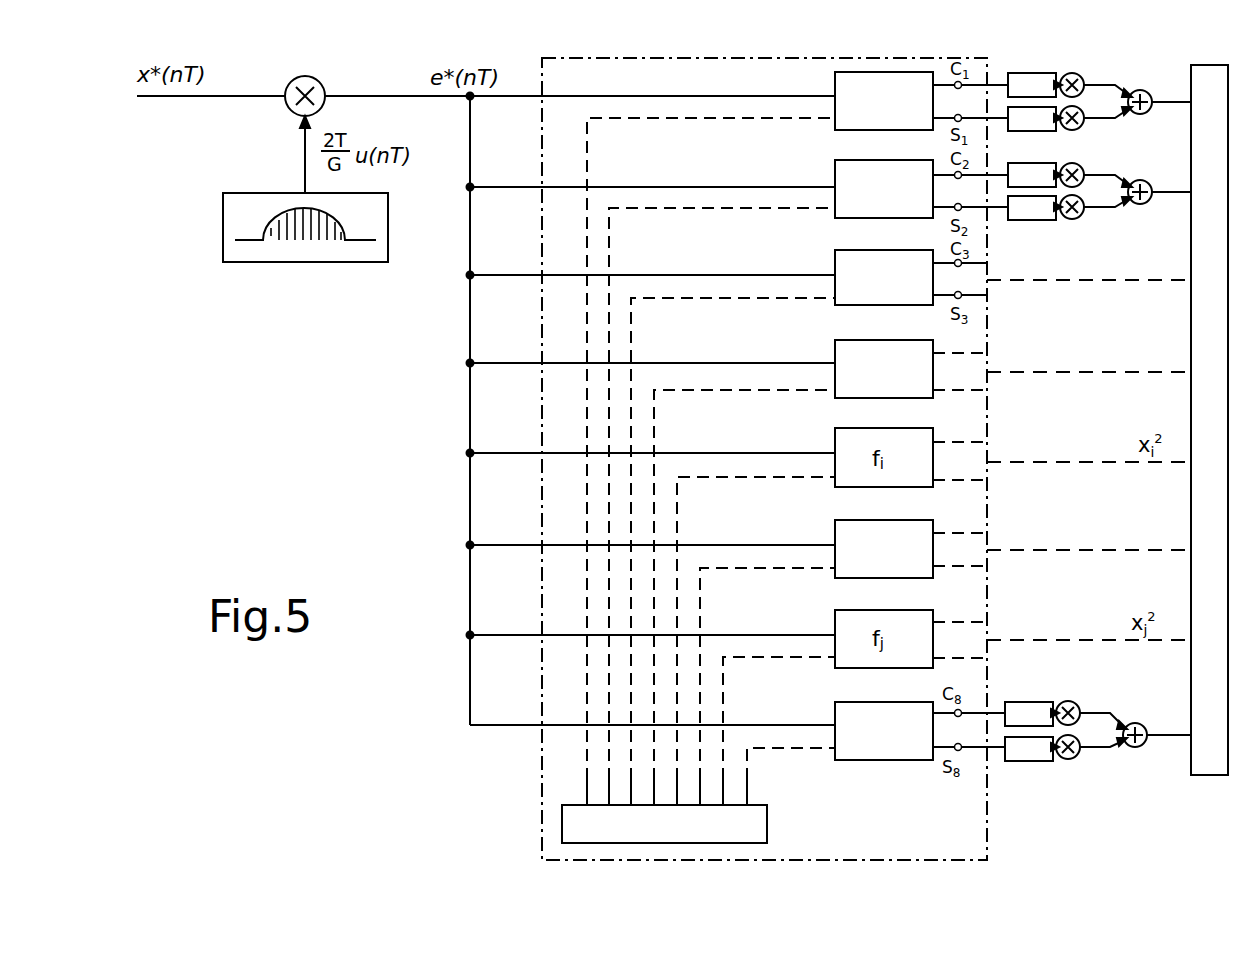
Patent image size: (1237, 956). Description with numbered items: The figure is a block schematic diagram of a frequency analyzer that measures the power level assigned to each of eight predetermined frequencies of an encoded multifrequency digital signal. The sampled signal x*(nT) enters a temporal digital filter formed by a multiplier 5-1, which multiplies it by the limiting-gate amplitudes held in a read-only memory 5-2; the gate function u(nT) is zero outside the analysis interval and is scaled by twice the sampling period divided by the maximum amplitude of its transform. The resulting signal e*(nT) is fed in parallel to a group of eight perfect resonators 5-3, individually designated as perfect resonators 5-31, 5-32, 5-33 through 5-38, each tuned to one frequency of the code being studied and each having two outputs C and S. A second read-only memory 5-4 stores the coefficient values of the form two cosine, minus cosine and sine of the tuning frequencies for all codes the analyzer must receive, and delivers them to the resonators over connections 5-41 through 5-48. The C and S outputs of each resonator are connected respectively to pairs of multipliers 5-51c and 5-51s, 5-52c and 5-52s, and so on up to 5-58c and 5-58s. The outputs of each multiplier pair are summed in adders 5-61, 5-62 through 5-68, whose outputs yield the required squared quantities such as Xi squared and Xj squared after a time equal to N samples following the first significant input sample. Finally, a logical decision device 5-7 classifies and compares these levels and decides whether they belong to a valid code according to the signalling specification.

The multiplier 5-1 is at (320, 82).
The read-only memory 5-2 is at (221, 227).
The group of perfect resonators 5-3 is at (542, 432).
The perfect resonator 5-31 is at (843, 130).
The perfect resonator 5-32 is at (843, 219).
The perfect resonator 5-33 is at (846, 306).
The perfect resonator 5-38 is at (846, 761).
The connection 5-41 is at (585, 775).
The connection 5-48 is at (748, 782).
The read-only memory 5-4 is at (767, 835).
The multiplier 5-51c is at (1082, 80).
The multiplier 5-51s is at (1083, 125).
The multiplier 5-52c is at (1083, 173).
The multiplier 5-52s is at (1078, 218).
The multiplier 5-58c is at (1078, 706).
The multiplier 5-58s is at (1075, 758).
The adder 5-61 is at (1148, 95).
The adder 5-62 is at (1146, 204).
The adder 5-68 is at (1143, 727).
The logical decision device 5-7 is at (1208, 778).